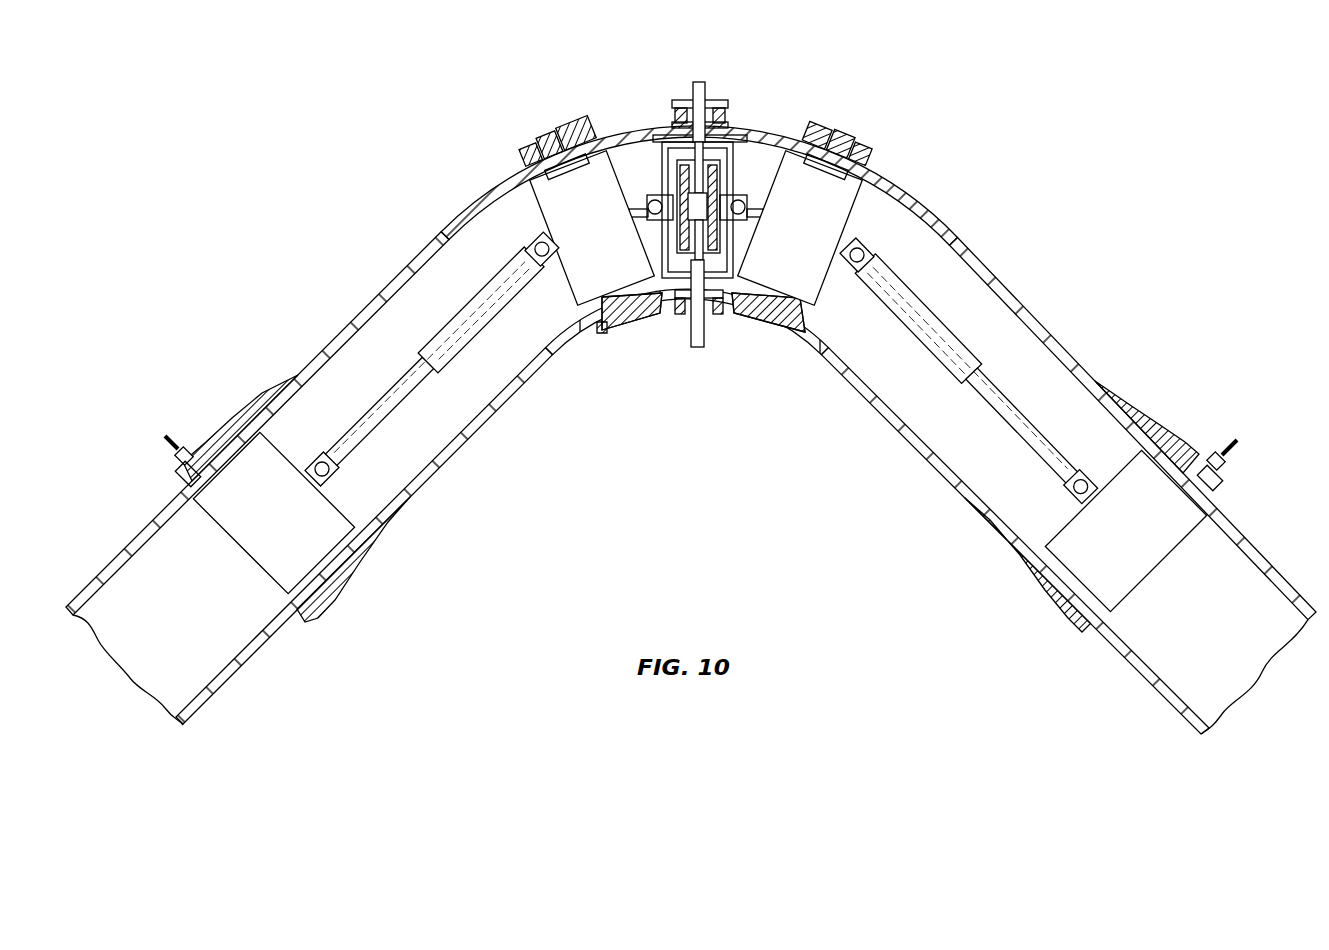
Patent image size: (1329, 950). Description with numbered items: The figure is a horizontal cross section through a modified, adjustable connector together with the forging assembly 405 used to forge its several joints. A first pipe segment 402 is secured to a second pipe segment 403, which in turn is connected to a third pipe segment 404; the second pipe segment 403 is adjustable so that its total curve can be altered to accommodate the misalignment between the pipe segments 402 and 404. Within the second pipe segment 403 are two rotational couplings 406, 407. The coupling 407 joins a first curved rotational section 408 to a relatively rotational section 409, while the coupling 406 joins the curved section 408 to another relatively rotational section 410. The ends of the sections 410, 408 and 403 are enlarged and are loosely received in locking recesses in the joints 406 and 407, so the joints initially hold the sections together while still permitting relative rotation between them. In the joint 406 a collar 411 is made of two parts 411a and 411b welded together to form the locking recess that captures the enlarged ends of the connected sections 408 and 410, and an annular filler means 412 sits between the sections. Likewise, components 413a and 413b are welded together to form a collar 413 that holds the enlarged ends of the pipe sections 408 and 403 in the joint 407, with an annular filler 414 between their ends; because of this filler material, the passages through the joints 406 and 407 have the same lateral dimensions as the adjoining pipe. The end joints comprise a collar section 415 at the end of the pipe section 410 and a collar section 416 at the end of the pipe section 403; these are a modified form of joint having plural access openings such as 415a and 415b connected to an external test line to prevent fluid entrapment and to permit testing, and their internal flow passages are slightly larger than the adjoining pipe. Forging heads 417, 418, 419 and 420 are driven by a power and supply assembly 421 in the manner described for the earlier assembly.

The first pipe segment 402 is at (1290, 581).
The second pipe segment 403 is at (1004, 283).
The third pipe segment 404 is at (121, 543).
The forging assembly 405 is at (224, 575).
The rotational coupling 406 is at (612, 357).
The rotational coupling 407 is at (762, 351).
The first curved rotational section 408 is at (640, 124).
The relatively rotational section 409 is at (810, 338).
The relatively rotational section 410 is at (500, 183).
The collar 411 is at (548, 130).
The collar part 411a is at (526, 148).
The collar part 411b is at (583, 123).
The annular filler means 412 is at (567, 162).
The collar 413 is at (836, 145).
The collar component 413a is at (813, 125).
The collar component 413b is at (872, 156).
The annular filler 414 is at (828, 158).
The collar section 415 is at (341, 595).
The access opening 415a is at (249, 410).
The access opening 415b is at (211, 445).
The collar section 416 is at (1055, 603).
The forging head 417 is at (288, 519).
The forging head 418 is at (610, 249).
The forging head 419 is at (815, 249).
The forging head 420 is at (1150, 534).
The power and supply assembly 421 is at (644, 189).